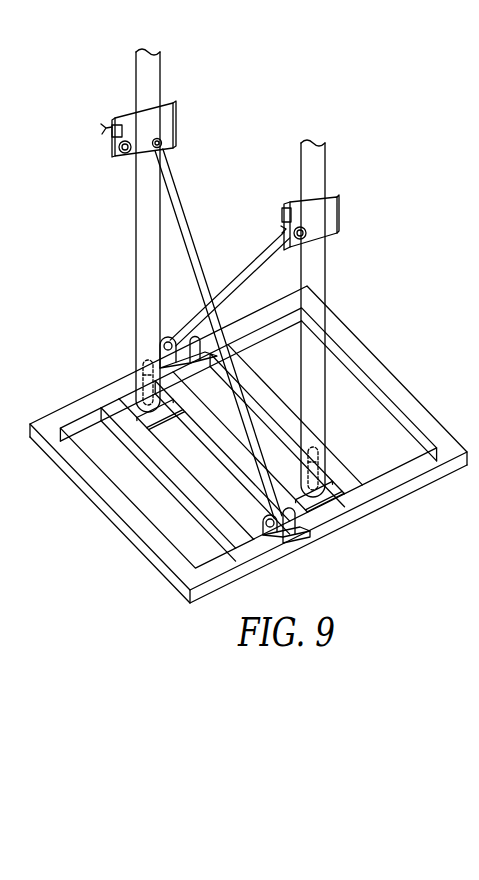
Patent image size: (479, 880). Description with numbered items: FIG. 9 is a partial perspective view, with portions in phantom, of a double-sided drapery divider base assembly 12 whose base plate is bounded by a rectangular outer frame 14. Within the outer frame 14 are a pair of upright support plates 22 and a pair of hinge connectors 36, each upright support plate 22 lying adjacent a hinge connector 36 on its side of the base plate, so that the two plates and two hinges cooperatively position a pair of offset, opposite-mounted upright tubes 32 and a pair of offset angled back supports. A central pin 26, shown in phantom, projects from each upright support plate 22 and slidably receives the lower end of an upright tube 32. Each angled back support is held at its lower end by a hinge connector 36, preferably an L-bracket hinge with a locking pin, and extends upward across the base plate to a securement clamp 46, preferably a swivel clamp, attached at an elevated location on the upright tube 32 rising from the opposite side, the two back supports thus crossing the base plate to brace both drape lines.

The fall protection anchor assembly 12 is at (6, 589).
The outer frame 14 is at (376, 345).
The upright support plate 22 is at (120, 397).
The central pin 26 is at (140, 372).
The upright tube 32 is at (148, 200).
The hinge connector 36 is at (175, 340).
The securement clamp 46 is at (170, 118).